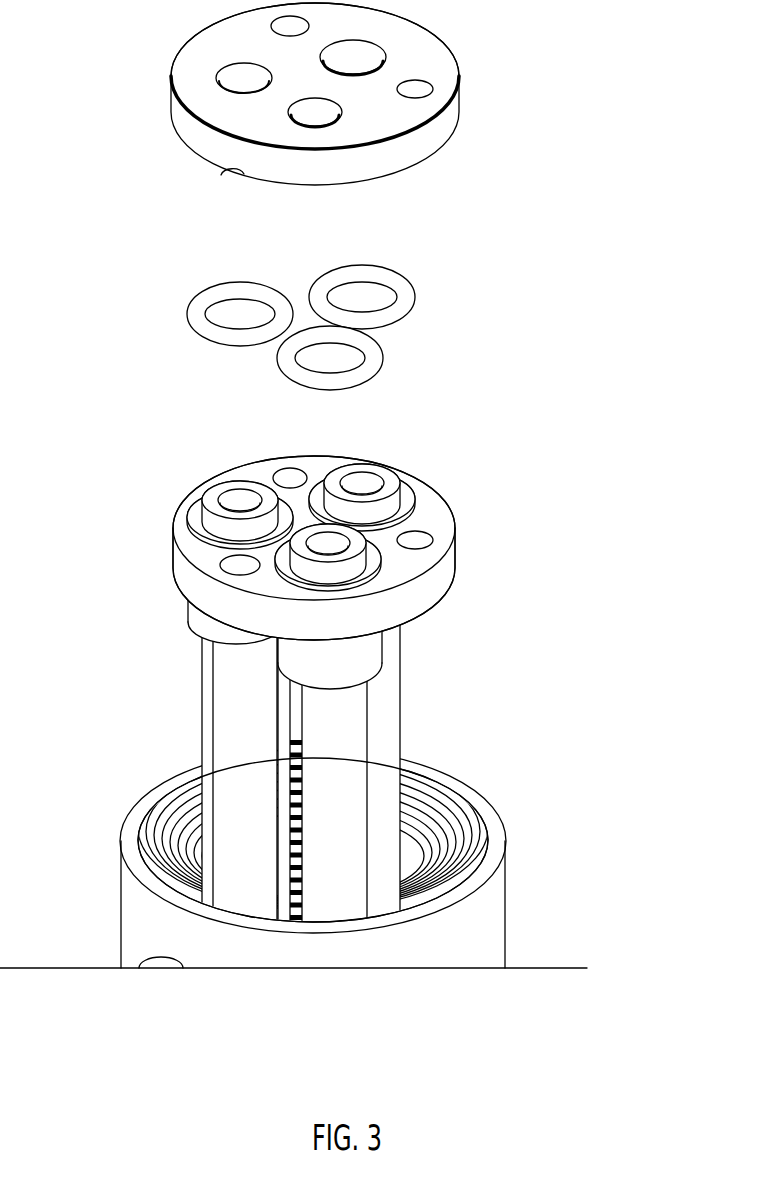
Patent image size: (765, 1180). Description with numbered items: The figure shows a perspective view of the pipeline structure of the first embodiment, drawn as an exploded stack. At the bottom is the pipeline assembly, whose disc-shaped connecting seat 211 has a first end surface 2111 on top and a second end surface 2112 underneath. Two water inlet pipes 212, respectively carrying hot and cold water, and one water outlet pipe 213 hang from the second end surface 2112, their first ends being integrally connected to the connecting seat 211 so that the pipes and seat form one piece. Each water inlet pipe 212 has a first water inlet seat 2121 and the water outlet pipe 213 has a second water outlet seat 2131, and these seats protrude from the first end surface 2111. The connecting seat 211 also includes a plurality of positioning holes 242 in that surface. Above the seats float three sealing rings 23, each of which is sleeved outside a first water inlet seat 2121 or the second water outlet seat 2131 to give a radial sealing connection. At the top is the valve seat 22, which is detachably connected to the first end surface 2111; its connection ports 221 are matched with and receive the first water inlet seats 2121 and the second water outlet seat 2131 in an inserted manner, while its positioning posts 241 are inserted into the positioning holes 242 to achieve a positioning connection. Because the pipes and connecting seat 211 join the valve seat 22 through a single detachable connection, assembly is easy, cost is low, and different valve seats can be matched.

The valve seat 22 is at (200, 127).
The connection port 221 is at (242, 85).
The positioning post 241 is at (227, 176).
The sealing ring 23 is at (200, 304).
The positioning hole 242 is at (290, 478).
The first end surface 2111 is at (253, 472).
The second water outlet seat 2131 is at (388, 487).
The first water inlet seat 2121 is at (217, 513).
The connecting seat 211 is at (428, 582).
The second end surface 2112 is at (413, 617).
The water inlet pipe 212 is at (238, 735).
The water outlet pipe 213 is at (383, 720).